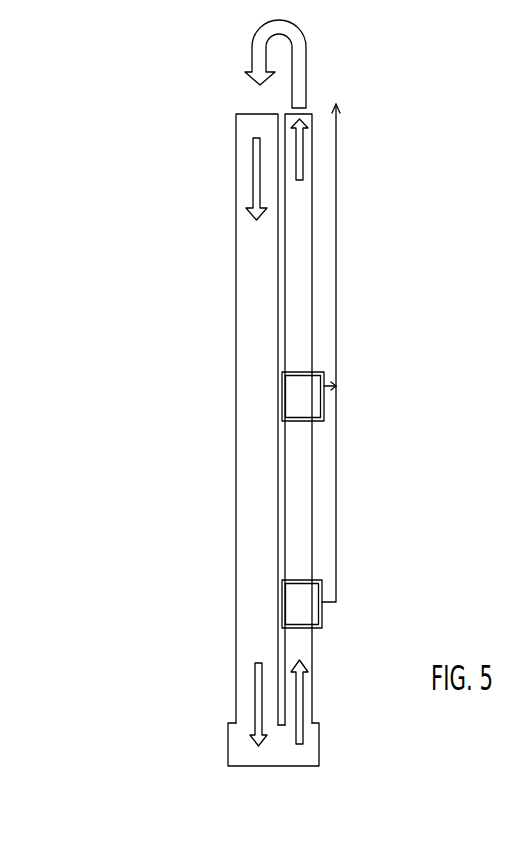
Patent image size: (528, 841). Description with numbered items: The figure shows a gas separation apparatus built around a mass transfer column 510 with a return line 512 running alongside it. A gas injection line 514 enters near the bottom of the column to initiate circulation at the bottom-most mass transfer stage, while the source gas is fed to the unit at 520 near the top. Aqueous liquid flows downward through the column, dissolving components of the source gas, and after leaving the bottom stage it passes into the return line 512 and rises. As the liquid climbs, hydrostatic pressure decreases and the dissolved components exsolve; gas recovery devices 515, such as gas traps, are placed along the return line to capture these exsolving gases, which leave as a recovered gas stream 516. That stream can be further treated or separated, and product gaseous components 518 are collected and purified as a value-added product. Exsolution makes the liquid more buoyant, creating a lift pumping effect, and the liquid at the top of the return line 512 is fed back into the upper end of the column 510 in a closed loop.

The mass transfer column 510 is at (183, 115).
The return line 512 is at (312, 300).
The gas injection line 514 is at (325, 712).
The gas recovery devices 515 is at (326, 600).
The recovered exsolving gases 516 is at (337, 339).
The product gaseous components 518 is at (236, 163).
The source gas feed 520 is at (229, 531).